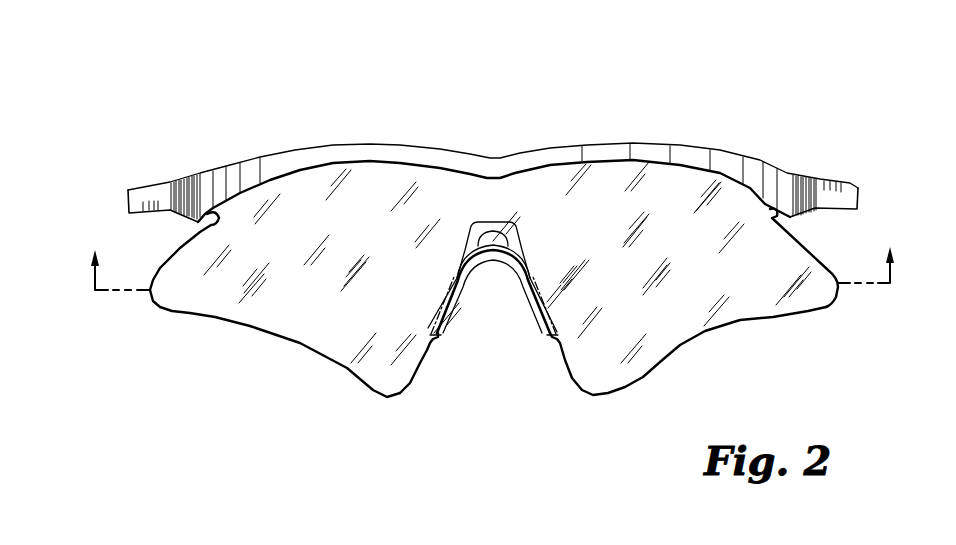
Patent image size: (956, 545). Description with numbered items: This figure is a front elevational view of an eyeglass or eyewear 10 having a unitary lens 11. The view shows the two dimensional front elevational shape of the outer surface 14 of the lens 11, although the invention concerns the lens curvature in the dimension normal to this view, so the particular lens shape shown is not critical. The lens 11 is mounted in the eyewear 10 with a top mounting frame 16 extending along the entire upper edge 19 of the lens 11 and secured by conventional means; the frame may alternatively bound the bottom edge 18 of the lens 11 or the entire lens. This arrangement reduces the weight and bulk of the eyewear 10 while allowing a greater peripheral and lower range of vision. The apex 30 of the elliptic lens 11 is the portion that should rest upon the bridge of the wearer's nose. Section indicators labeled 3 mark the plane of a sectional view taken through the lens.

The eyewear 10 is at (614, 79).
The mounting frame 16 is at (274, 153).
The upper edge 19 is at (322, 165).
The bottom edge 18 is at (287, 340).
The outer surface 14 is at (693, 317).
The unitary lens 11 is at (835, 300).
The apex 30 is at (505, 192).
The section line 3- 3 is at (490, 251).